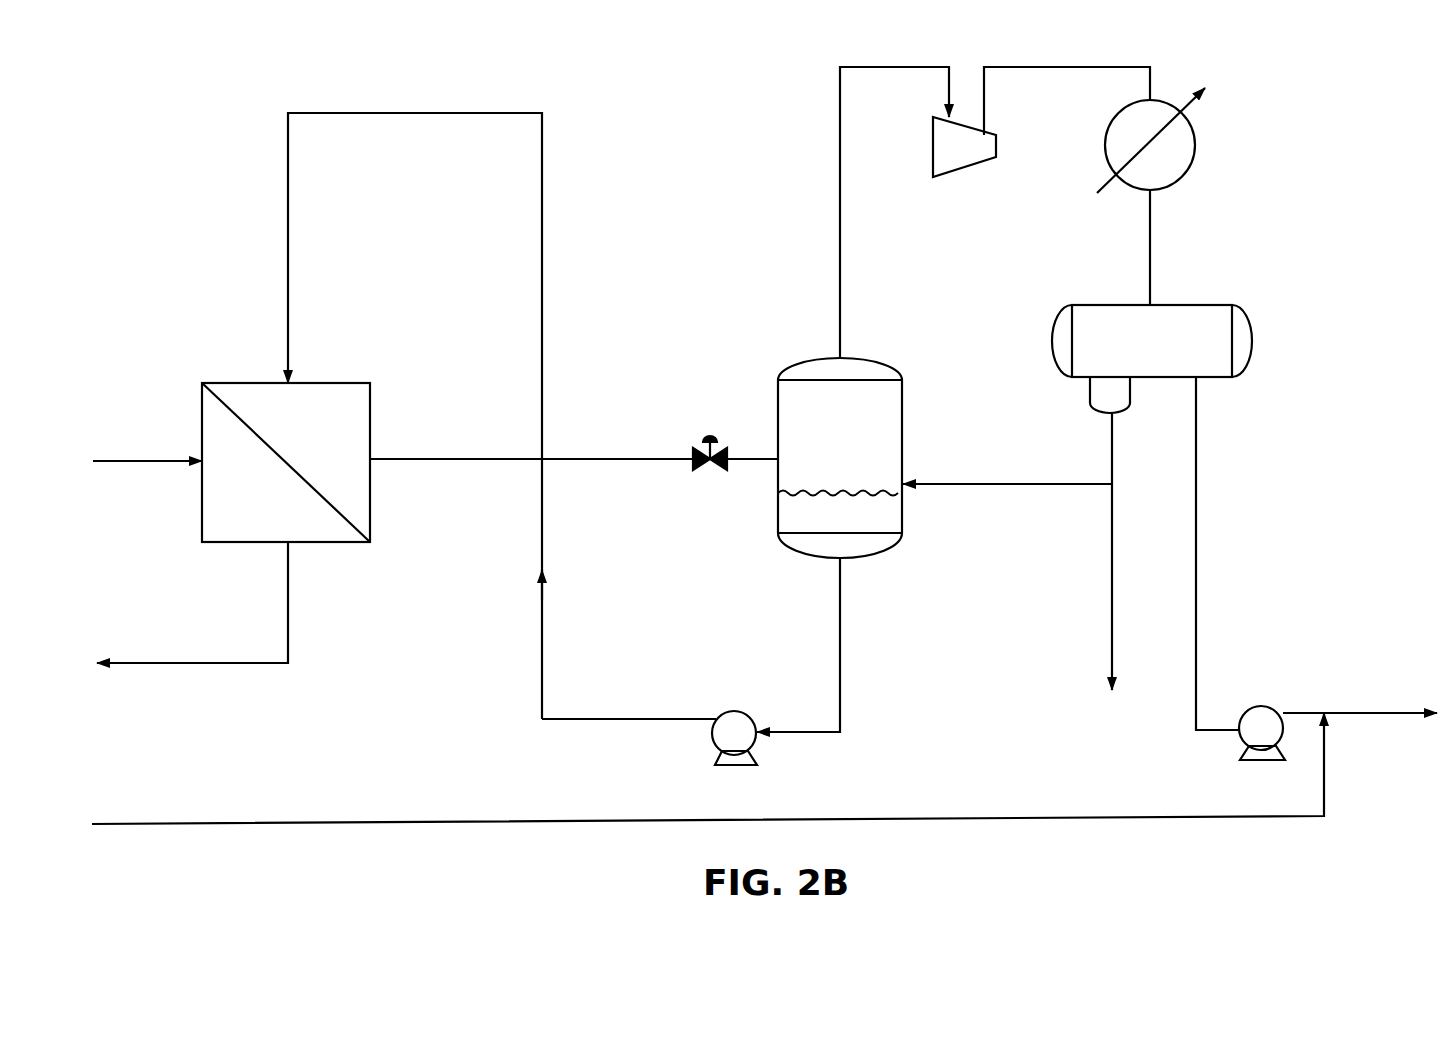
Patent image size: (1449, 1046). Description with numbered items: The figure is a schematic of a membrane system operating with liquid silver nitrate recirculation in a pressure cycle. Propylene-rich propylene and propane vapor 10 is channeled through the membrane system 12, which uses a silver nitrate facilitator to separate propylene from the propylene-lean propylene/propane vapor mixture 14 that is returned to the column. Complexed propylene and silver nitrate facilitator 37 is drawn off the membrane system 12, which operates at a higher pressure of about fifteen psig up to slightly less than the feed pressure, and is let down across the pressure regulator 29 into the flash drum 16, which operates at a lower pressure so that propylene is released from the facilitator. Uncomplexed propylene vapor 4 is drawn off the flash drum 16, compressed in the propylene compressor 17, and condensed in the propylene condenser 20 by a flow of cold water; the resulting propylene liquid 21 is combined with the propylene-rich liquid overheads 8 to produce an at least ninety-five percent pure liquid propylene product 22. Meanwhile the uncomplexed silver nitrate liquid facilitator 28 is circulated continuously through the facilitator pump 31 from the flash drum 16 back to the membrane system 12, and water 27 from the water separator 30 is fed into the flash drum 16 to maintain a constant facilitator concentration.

The uncomplexed propylene vapor 4 is at (836, 175).
The propylene liquid overheads 8 is at (466, 821).
The propylene and propane vapor 10 is at (131, 461).
The membrane system 12 is at (214, 383).
The propylene-lean propylene/propane vapor mixture 14 is at (289, 578).
The flash drum 16 is at (777, 393).
The propylene compressor 17 is at (985, 163).
The propylene condenser 20 is at (1196, 158).
The propylene liquid 21 is at (1197, 498).
The liquid propylene product 22 is at (1362, 713).
The water 27 is at (1026, 484).
The facilitator 28 is at (430, 113).
The pressure regulator 29 is at (700, 452).
The water separator 30 is at (1198, 303).
The facilitator pump 31 is at (733, 715).
The complexed propylene and silver nitrate facilitator 37 is at (459, 459).